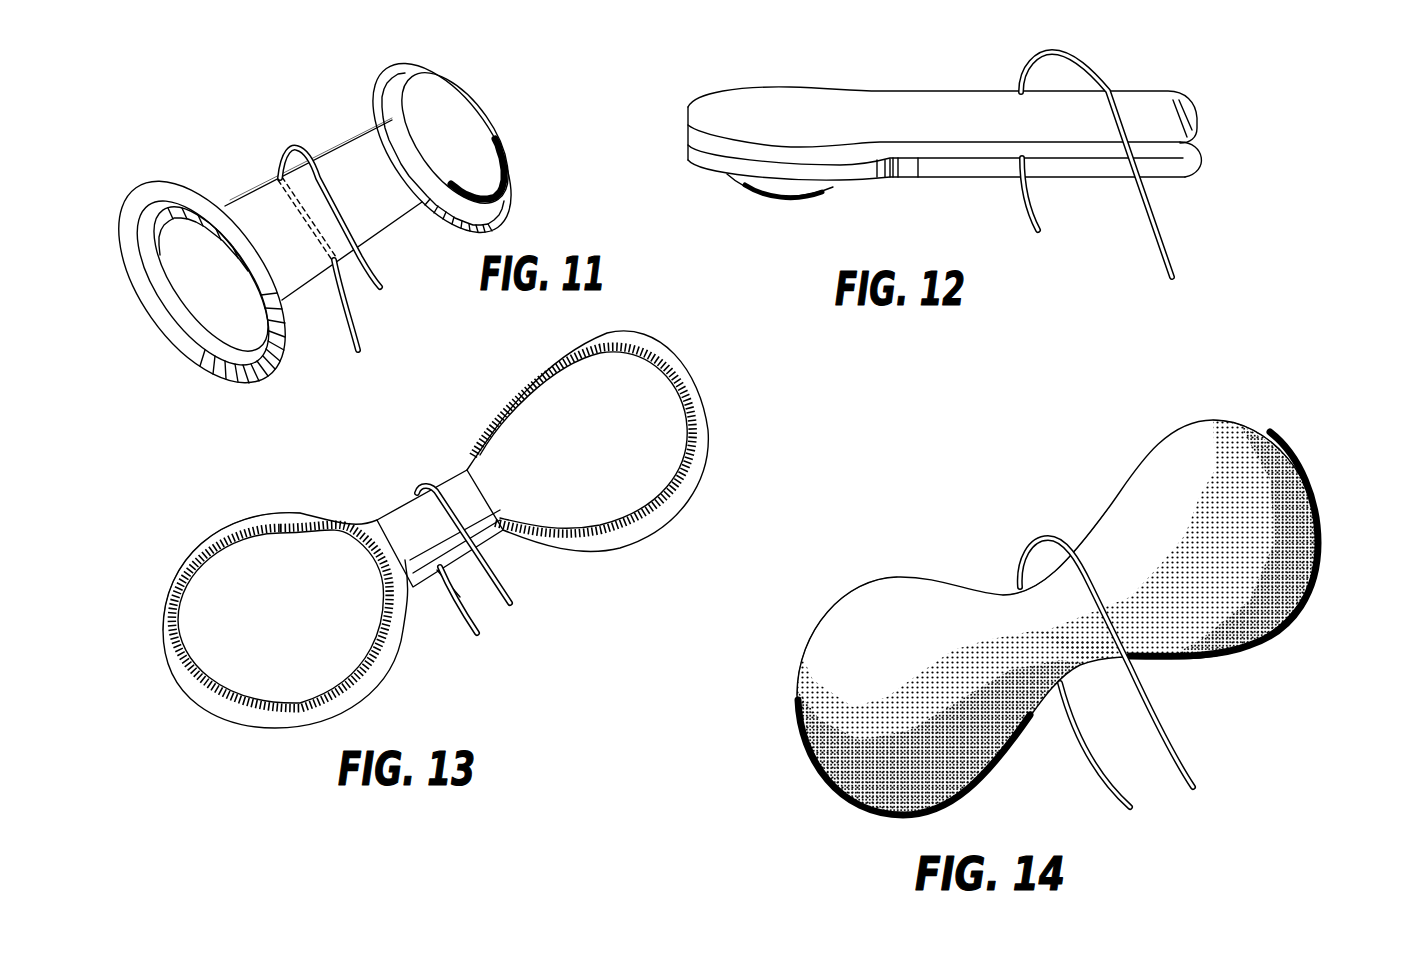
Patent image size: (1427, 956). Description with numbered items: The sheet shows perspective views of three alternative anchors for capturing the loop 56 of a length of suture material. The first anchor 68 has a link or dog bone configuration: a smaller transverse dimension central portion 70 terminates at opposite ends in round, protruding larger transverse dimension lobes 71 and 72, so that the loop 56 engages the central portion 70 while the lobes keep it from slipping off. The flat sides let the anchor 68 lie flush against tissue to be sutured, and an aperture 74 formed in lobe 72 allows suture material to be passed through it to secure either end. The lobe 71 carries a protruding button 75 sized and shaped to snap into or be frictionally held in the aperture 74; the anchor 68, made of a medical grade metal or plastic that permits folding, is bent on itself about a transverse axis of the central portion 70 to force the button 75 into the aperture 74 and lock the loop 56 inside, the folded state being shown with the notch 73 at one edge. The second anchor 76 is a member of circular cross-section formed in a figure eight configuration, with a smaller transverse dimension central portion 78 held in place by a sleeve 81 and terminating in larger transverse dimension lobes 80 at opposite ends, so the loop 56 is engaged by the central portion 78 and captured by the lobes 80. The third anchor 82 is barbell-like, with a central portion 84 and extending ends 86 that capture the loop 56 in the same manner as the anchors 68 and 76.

In FIG. 11, the loop 56 is at (285, 150).
In FIG. 12, the loop 56 is at (1075, 55).
In FIG. 13, the loop 56 is at (420, 490).
In FIG. 14, the loop 56 is at (1170, 740).
In FIG. 11, the anchor 68 is at (343, 128).
In FIG. 11, the central portion 70 is at (385, 203).
In FIG. 11, the lobe 71 is at (407, 57).
In FIG. 12, the lobe 71 is at (800, 105).
In FIG. 11, the lobe 72 is at (150, 323).
In FIG. 12, the lobe 72 is at (698, 158).
In FIG. 12, the notch 73 is at (1200, 128).
In FIG. 11, the aperture 74 is at (167, 253).
In FIG. 11, the button 75 is at (482, 133).
In FIG. 12, the button 75 is at (800, 192).
In FIG. 13, the anchor 76 is at (240, 520).
In FIG. 13, the central portion 78 is at (372, 520).
In FIG. 13, the lobes 80 is at (708, 410).
In FIG. 13, the sleeve 81 is at (421, 585).
In FIG. 14, the anchor 82 is at (1100, 505).
In FIG. 14, the central portion 84 is at (1000, 592).
In FIG. 14, the extending ends 86 is at (1320, 552).